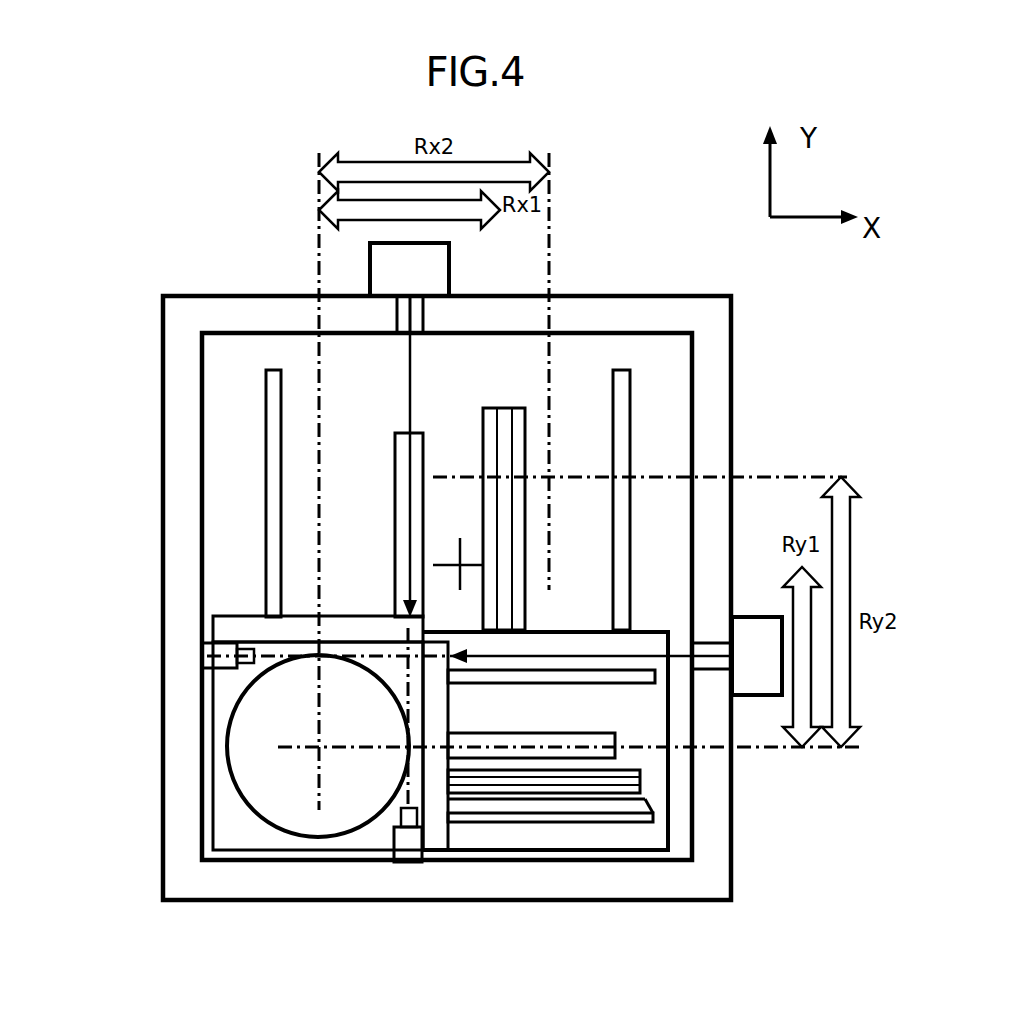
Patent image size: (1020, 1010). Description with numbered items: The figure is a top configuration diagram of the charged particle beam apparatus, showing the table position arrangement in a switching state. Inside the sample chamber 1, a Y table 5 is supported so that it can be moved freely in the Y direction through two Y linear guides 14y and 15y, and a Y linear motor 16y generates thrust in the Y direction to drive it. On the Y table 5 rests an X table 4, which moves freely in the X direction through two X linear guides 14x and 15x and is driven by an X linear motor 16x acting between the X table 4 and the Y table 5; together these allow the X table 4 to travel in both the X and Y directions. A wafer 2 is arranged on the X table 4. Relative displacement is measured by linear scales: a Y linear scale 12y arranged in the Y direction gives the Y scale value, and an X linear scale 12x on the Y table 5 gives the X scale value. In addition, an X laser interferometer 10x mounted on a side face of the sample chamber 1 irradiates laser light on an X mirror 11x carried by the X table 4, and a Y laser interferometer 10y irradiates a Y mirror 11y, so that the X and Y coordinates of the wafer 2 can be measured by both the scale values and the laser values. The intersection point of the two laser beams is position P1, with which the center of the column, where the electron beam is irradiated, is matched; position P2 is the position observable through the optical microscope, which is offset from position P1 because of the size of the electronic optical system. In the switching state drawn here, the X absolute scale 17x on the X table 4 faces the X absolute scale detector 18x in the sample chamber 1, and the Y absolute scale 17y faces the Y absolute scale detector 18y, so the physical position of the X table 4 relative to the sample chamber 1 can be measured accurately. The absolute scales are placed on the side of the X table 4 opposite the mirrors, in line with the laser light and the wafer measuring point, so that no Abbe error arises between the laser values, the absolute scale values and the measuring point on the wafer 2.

The sample chamber 1 is at (600, 309).
The wafer 2 is at (293, 822).
The X table 4 is at (230, 826).
The Y table 5 is at (652, 720).
The X laser interferometer 10x is at (755, 680).
The Y laser interferometer 10y is at (422, 270).
The X mirror 11x is at (435, 822).
The Y mirror 11y is at (240, 628).
The X linear scale 12x is at (546, 760).
The Y linear scale 12y is at (395, 493).
The X linear guide 14x is at (498, 823).
The Y linear guide 14y is at (264, 407).
The X linear guide 15x is at (600, 683).
The Y linear guide 15y is at (630, 508).
The X linear motor 16x is at (650, 817).
The Y linear motor 16y is at (527, 460).
The X absolute scale 17x is at (245, 664).
The Y absolute scale 17y is at (405, 830).
The X absolute scale detector 18x is at (225, 645).
The Y absolute scale detector 18y is at (418, 855).
The position P1 is at (405, 652).
The position P2 is at (455, 558).